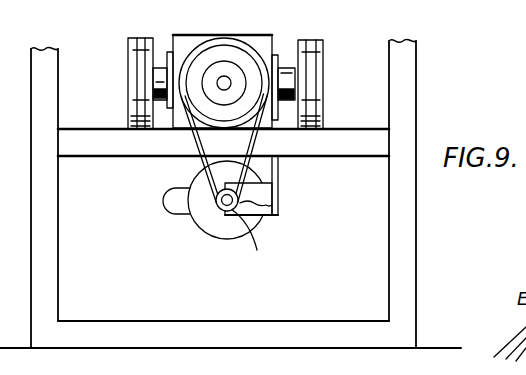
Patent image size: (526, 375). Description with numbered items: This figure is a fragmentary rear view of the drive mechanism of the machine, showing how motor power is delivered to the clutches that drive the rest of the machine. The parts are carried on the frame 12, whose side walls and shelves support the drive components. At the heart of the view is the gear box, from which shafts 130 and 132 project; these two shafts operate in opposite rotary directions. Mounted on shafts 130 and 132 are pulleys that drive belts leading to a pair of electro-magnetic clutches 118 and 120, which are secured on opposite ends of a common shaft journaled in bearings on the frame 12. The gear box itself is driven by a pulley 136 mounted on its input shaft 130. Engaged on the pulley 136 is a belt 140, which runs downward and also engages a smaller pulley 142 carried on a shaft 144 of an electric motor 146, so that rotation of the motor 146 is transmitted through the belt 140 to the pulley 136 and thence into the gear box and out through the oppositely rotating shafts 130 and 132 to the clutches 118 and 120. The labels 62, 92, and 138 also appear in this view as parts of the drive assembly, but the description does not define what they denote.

The frame 12 is at (230, 193).
The motor housing 62 is at (222, 64).
The mounting plate 92 is at (299, 60).
The electro-magnetic clutch 118 is at (313, 82).
The electro-magnetic clutch 120 is at (132, 84).
The shaft 130 is at (288, 72).
The shaft 132 is at (163, 70).
The pulley 136 is at (252, 98).
The pulley shaft 138 is at (223, 86).
The belt 140 is at (197, 157).
The pulley 142 is at (280, 205).
The shaft 144 is at (262, 235).
The electric motor 146 is at (220, 227).